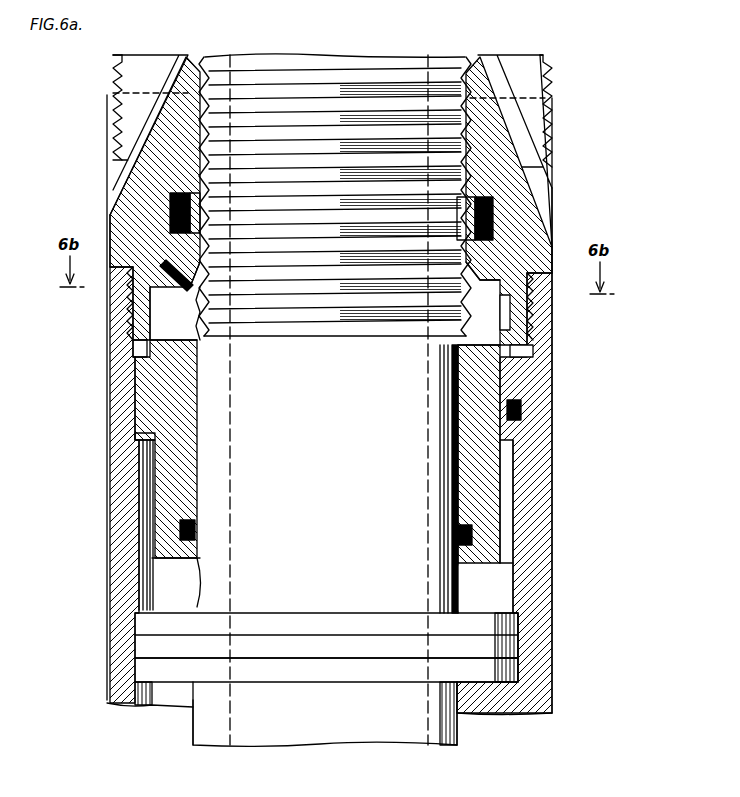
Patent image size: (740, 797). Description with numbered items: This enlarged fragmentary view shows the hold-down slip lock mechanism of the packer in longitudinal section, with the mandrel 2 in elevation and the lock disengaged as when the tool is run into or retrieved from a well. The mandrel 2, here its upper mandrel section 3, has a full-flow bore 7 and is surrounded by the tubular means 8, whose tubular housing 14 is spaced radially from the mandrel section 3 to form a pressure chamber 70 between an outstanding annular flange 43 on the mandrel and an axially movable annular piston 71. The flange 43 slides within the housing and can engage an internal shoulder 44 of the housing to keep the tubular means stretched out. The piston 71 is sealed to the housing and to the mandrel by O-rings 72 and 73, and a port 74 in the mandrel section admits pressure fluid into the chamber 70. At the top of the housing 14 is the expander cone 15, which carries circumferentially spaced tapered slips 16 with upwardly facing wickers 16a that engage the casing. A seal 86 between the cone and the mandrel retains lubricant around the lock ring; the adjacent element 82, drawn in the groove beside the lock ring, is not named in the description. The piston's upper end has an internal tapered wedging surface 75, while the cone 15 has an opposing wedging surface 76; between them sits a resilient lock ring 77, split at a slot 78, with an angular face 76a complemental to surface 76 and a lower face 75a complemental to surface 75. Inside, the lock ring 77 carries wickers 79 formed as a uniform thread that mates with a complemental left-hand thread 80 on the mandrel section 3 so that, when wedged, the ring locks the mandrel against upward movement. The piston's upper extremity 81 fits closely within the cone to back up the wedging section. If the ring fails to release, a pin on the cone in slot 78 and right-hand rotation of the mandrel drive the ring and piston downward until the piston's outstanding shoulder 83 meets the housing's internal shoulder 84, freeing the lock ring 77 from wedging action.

The mandrel 2 is at (470, 743).
The upper mandrel section 3 is at (390, 742).
The bore 7 is at (232, 708).
The tubular means 8 is at (560, 540).
The tubular housing 14 is at (533, 500).
The expander cone 15 is at (530, 232).
The slips 16 is at (130, 103).
The wickers 16a is at (120, 65).
The annular flange 43 is at (500, 668).
The internal shoulder 44 is at (515, 630).
The pressure chamber 70 is at (500, 575).
The annular piston 71 is at (503, 473).
The O-ring 72 is at (522, 410).
The O-ring 73 is at (455, 530).
The port 74 is at (210, 560).
The wedging surface 75 is at (440, 350).
The lower face 75a is at (520, 346).
The wedging surface 76 is at (492, 290).
The angularly disposed face 76a is at (530, 290).
The lock ring 77 is at (505, 312).
The slot 78 is at (140, 345).
The wickers 79 is at (200, 367).
The uniform thread 80 is at (450, 172).
The upper extremity of piston 81 is at (128, 330).
The seal element 82 is at (170, 272).
The outstanding shoulder 83 is at (500, 445).
The internal shoulder 84 is at (510, 438).
The seal 86 is at (495, 212).